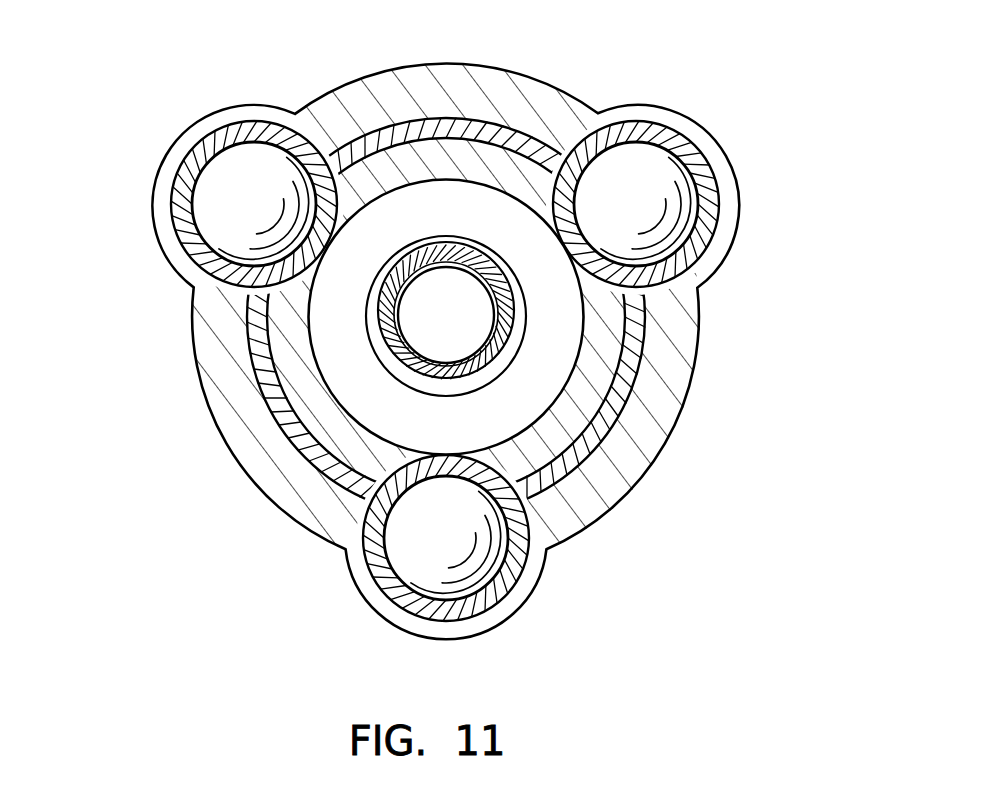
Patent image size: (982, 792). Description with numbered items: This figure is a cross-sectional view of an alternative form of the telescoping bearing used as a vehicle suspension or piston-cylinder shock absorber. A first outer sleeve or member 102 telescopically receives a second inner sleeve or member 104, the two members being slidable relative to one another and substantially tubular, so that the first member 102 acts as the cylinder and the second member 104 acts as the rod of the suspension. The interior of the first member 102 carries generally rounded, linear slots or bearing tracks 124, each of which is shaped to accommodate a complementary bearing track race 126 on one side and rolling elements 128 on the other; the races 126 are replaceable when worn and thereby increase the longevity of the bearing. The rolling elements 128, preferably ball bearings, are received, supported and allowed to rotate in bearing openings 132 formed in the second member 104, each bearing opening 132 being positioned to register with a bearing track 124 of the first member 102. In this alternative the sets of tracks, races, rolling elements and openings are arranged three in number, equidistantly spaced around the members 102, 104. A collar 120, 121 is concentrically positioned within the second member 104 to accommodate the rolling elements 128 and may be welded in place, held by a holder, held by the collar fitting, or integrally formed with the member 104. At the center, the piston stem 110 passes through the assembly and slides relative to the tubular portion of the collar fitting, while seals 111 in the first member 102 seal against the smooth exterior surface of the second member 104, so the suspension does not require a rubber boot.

The first outer member 102 is at (668, 402).
The second inner member 104 is at (635, 338).
The piston stem 110 is at (503, 355).
The seals 111 is at (385, 352).
The collar 120 is at (575, 425).
The collar 121 is at (446, 317).
The bearing track 124 is at (208, 132).
The bearing track race 126 is at (183, 177).
The rolling element 128 is at (204, 214).
The bearing opening 132 is at (213, 335).